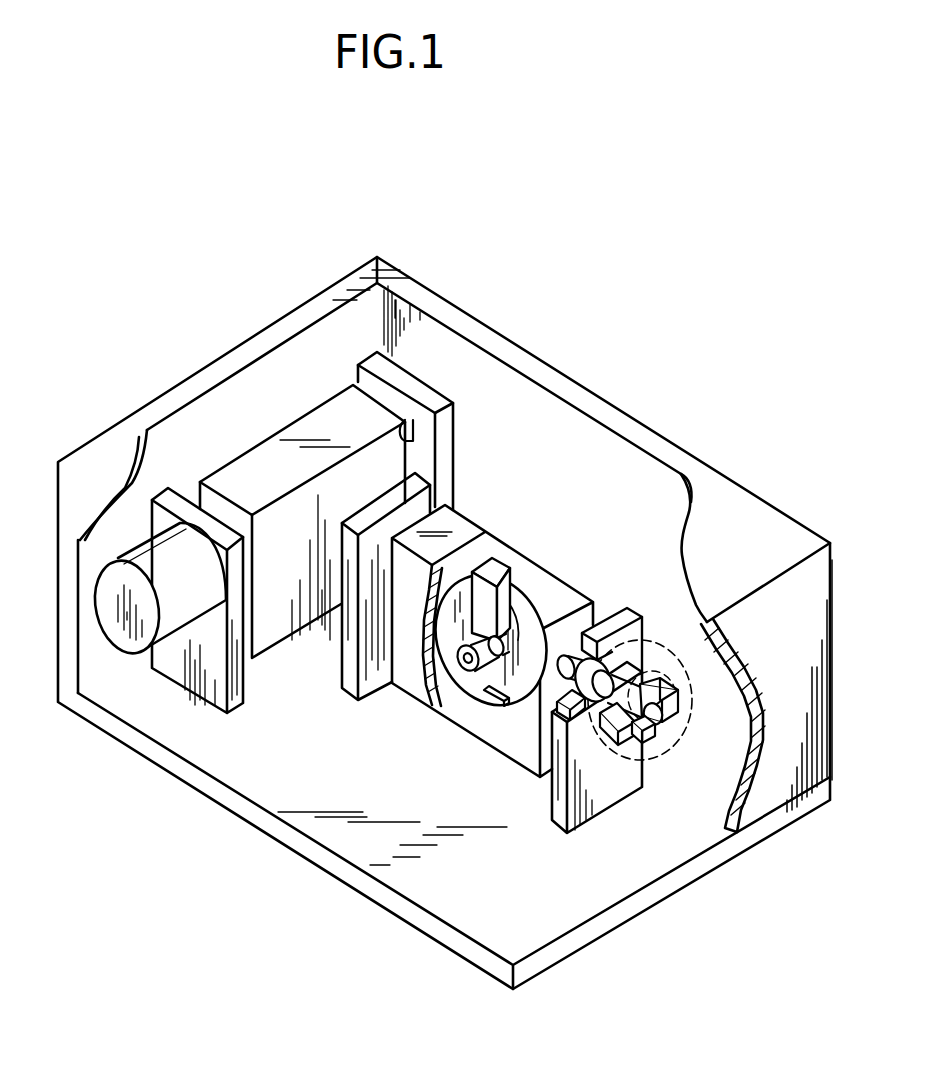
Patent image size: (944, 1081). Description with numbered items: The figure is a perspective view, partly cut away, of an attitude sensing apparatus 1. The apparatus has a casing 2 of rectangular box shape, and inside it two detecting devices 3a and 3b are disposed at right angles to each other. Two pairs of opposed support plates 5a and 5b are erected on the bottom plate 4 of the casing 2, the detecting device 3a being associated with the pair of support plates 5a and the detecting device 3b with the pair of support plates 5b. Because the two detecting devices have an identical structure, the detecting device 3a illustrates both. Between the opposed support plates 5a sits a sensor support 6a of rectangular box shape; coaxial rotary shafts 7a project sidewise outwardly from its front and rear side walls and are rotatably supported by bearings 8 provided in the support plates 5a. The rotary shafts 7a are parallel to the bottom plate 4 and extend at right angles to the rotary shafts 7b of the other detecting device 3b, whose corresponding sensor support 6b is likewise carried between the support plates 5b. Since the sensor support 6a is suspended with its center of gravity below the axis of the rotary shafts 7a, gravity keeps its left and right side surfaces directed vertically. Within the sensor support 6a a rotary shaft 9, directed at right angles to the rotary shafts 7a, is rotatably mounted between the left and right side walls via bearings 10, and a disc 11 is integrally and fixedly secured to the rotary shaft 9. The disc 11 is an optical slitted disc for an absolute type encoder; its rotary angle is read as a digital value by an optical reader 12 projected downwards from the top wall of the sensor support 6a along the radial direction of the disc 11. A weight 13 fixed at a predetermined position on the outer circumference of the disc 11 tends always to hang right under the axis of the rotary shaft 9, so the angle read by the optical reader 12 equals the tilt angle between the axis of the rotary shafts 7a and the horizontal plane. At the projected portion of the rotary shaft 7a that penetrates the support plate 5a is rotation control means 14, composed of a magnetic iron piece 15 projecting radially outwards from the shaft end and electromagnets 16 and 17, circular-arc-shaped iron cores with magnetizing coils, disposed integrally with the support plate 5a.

The attitude sensing apparatus 1 is at (172, 376).
The casing 2 is at (580, 385).
The detecting device 3a is at (533, 547).
The detecting device 3b is at (270, 415).
The bottom plate 4 is at (303, 868).
The support plates 5a is at (338, 688).
The support plates 5b is at (408, 380).
The sensor support 6a is at (588, 590).
The base block 6b is at (252, 466).
The rotary shafts 7a is at (647, 677).
The rotary shafts 7b is at (410, 426).
The bearings 8 is at (517, 735).
The rotary shaft 9 is at (517, 613).
The bearings 10 is at (453, 655).
The disc 11 is at (490, 675).
The optical reader 12 is at (500, 551).
The weight 13 is at (484, 705).
The rotation control means 14 is at (684, 689).
The magnetic iron piece 15 is at (655, 755).
The electromagnet 16 is at (608, 747).
The electromagnet 17 is at (700, 727).